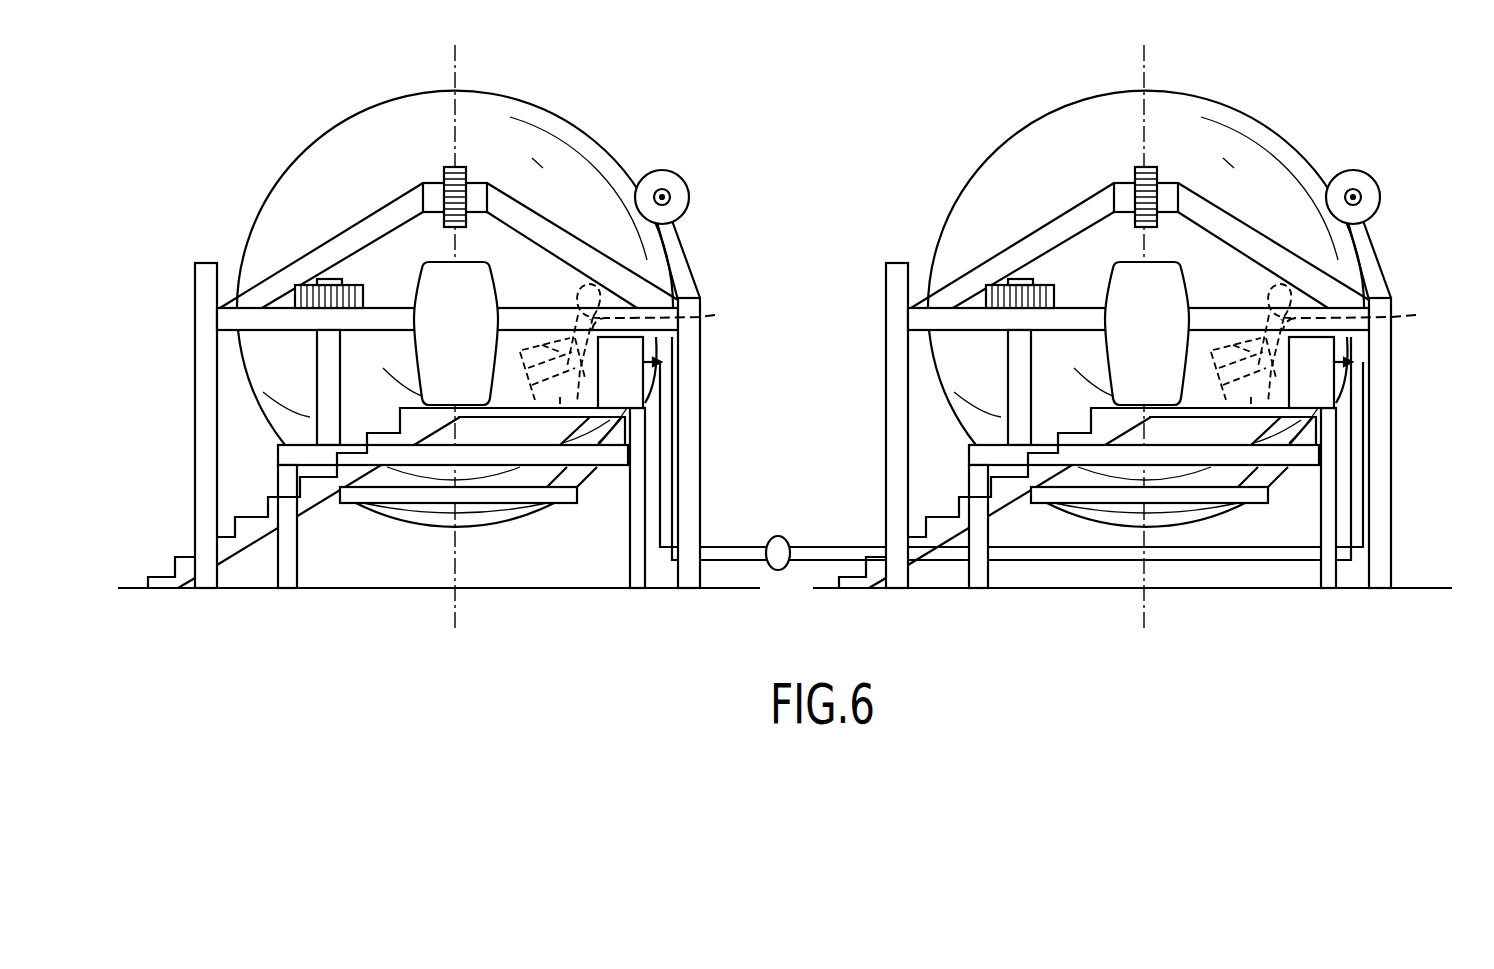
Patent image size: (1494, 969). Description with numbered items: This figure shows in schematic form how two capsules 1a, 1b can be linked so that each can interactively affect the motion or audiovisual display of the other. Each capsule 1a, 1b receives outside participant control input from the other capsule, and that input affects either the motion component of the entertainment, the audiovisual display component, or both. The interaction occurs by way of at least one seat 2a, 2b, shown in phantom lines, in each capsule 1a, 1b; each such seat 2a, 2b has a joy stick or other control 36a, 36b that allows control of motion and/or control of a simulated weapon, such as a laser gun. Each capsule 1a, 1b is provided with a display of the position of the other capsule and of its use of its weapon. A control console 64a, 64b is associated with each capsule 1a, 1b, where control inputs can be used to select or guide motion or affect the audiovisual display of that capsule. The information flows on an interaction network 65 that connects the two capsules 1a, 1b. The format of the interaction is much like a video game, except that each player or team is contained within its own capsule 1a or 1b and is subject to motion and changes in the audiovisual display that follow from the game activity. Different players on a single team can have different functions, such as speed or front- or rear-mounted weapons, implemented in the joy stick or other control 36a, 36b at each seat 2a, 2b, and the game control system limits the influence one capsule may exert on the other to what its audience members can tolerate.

The capsule 1a is at (545, 108).
The capsule 1b is at (1132, 338).
The seat 2a is at (667, 314).
The seat 2b is at (1363, 314).
The joy stick or other control 36a is at (536, 338).
The joy stick or other control 36b is at (1244, 331).
The control console 64a is at (632, 352).
The control console 64b is at (1374, 371).
The interaction network 65 is at (778, 536).